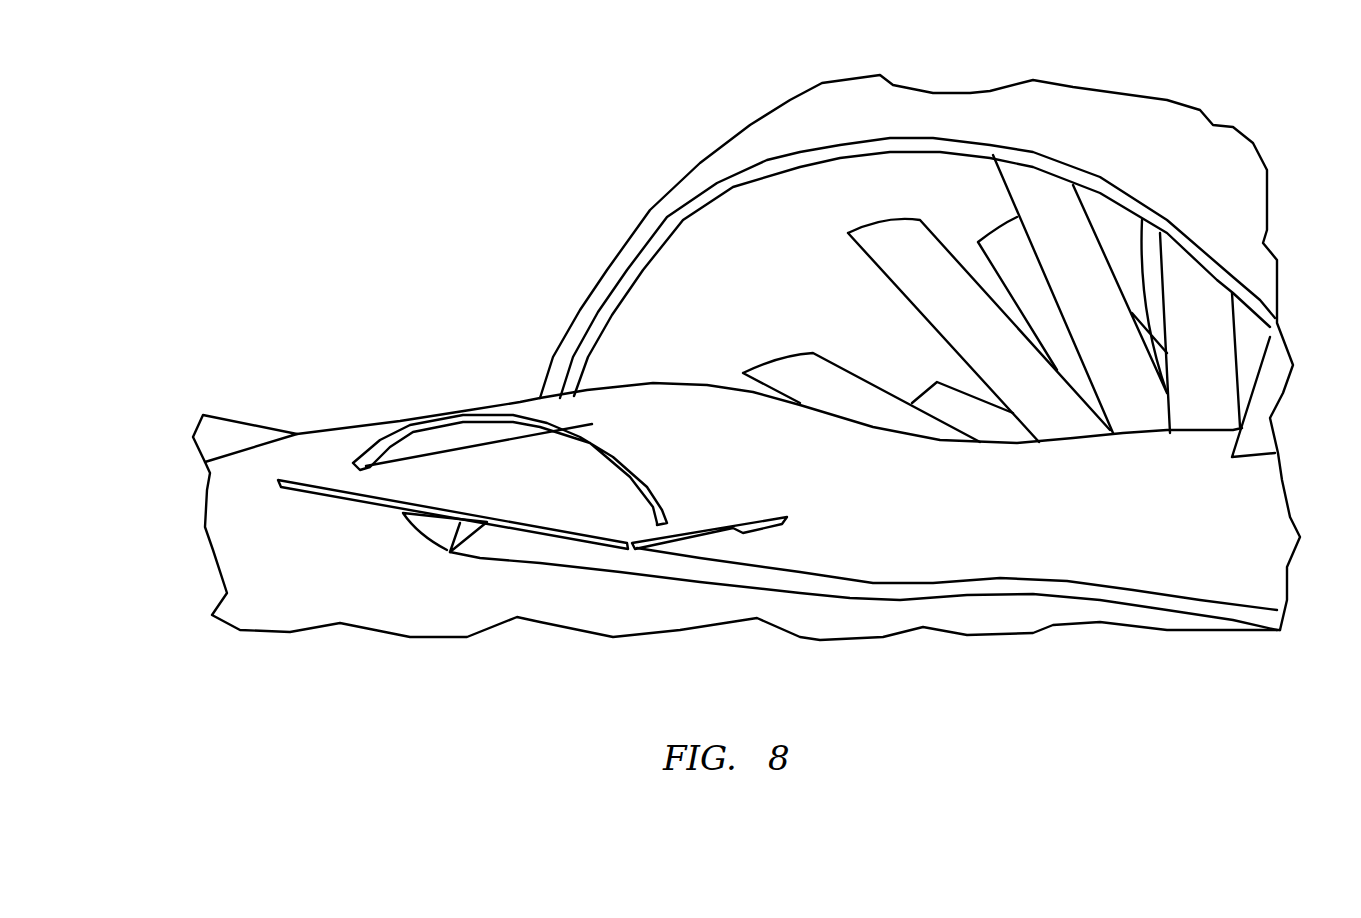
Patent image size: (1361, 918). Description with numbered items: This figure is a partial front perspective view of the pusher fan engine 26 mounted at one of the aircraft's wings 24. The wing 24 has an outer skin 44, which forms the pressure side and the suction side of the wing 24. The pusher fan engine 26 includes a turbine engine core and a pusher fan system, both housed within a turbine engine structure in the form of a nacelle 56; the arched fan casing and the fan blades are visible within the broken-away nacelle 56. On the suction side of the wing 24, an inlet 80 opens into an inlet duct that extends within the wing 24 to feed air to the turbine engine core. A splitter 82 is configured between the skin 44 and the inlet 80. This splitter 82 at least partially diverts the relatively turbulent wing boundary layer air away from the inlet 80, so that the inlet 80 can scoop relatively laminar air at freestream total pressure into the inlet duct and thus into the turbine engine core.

The wing 24 is at (237, 553).
The pusher fan engine 26 is at (638, 205).
The outer skin 44 is at (222, 481).
The nacelle 56 is at (1048, 100).
The inlet 80 is at (583, 478).
The splitter 82 is at (636, 546).